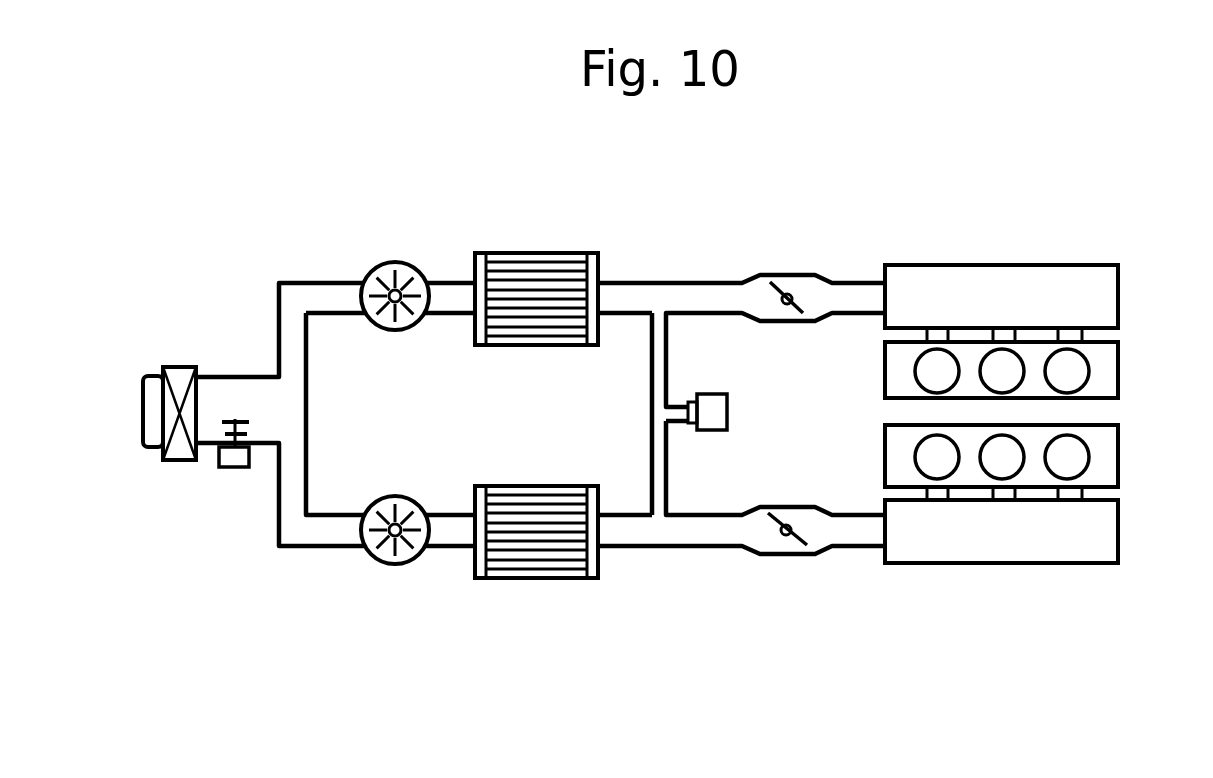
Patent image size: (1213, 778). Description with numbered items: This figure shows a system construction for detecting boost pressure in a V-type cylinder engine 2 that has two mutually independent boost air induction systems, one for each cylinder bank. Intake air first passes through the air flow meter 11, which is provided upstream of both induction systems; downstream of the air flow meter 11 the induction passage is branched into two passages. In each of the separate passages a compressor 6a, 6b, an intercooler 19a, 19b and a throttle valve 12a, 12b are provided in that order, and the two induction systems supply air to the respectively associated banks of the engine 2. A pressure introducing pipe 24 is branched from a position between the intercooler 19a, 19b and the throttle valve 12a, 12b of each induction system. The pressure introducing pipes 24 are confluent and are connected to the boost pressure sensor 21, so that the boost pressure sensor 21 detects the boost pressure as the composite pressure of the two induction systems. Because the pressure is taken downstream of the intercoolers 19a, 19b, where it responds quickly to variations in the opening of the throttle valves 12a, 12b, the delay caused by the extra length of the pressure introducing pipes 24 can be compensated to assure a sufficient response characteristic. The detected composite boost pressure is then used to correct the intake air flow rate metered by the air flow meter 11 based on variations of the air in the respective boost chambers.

The engine 2 is at (1130, 407).
The compressor 6a is at (380, 262).
The compressor 6b is at (390, 567).
The air flow meter 11 is at (237, 470).
The throttle valve 12a is at (787, 278).
The throttle valve 12b is at (798, 542).
The intercooler 19a is at (583, 253).
The intercooler 19b is at (553, 580).
The boost pressure sensor 21 is at (730, 413).
The pressure introducing pipe 24 is at (655, 468).